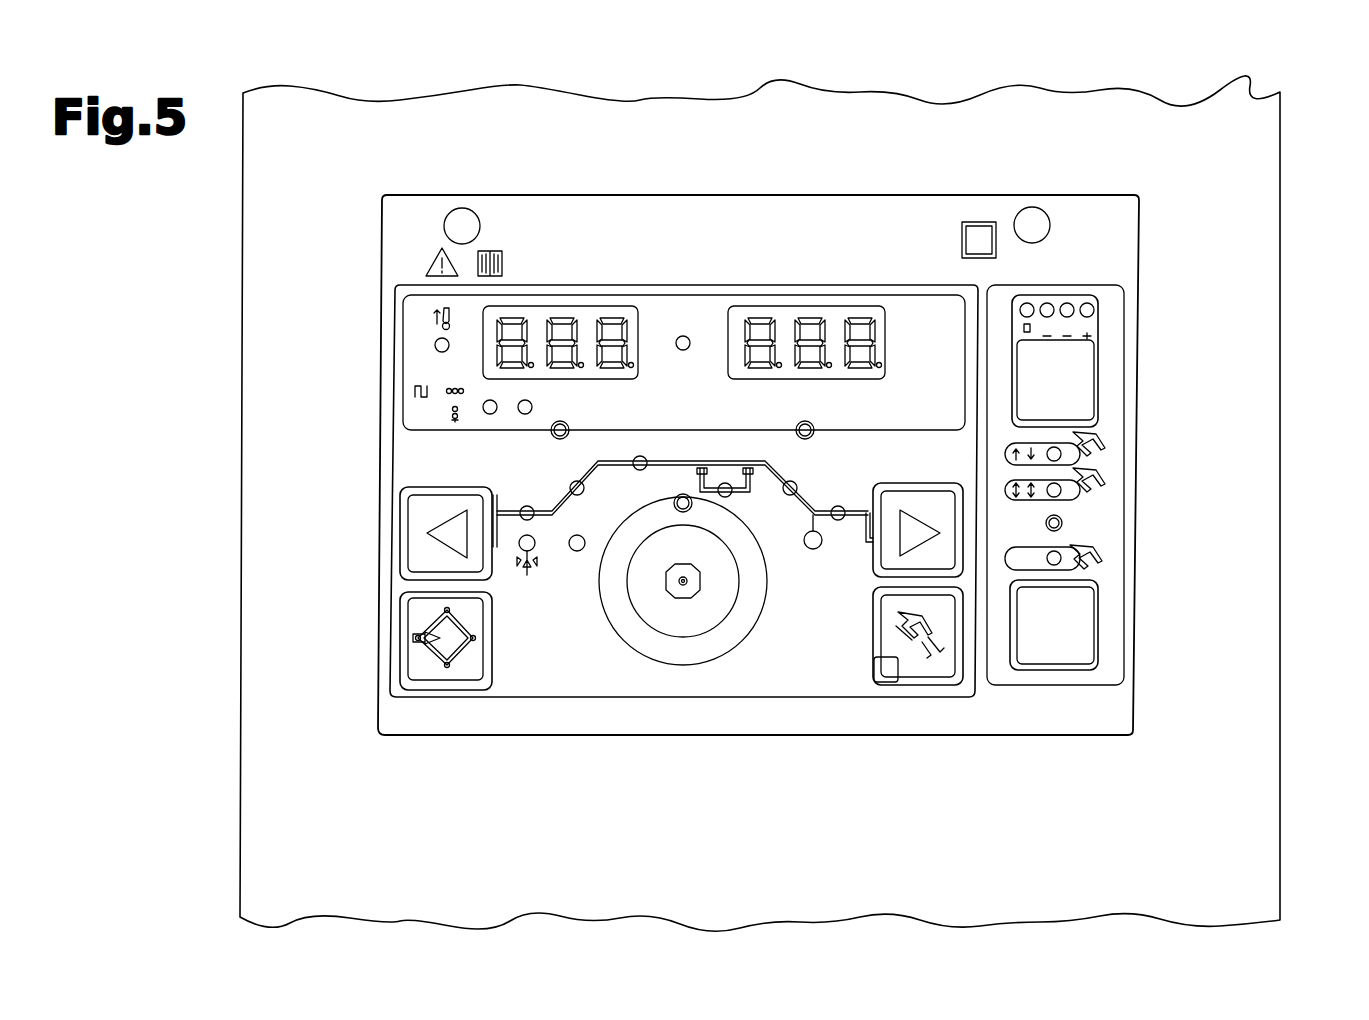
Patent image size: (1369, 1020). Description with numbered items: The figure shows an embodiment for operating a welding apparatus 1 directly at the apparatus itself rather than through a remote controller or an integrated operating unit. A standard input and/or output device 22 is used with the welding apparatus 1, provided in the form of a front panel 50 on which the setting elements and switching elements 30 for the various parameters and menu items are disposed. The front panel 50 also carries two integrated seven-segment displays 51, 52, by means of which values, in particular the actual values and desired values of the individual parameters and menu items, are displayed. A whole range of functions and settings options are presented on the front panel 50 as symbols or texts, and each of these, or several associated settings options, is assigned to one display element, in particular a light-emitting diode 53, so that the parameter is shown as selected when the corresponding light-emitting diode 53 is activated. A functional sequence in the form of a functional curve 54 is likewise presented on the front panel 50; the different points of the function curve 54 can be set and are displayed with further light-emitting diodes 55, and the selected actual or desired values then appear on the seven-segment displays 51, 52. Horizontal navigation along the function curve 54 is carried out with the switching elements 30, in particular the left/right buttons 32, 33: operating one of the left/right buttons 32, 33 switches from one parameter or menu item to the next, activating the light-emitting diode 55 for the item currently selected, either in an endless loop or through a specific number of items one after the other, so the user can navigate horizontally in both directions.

The welding apparatus 1 is at (1236, 190).
The input and/or output device 22 is at (930, 155).
The setting elements and switching elements 30 is at (432, 700).
The left button 32 is at (422, 558).
The right button 33 is at (938, 558).
The front panel 50 is at (1108, 226).
The 7-segment display 51 is at (540, 316).
The 7-segment display 52 is at (788, 318).
The light-emitting diode 53 is at (462, 226).
The functional curve 54 is at (513, 487).
The light-emitting diode 55 is at (527, 506).